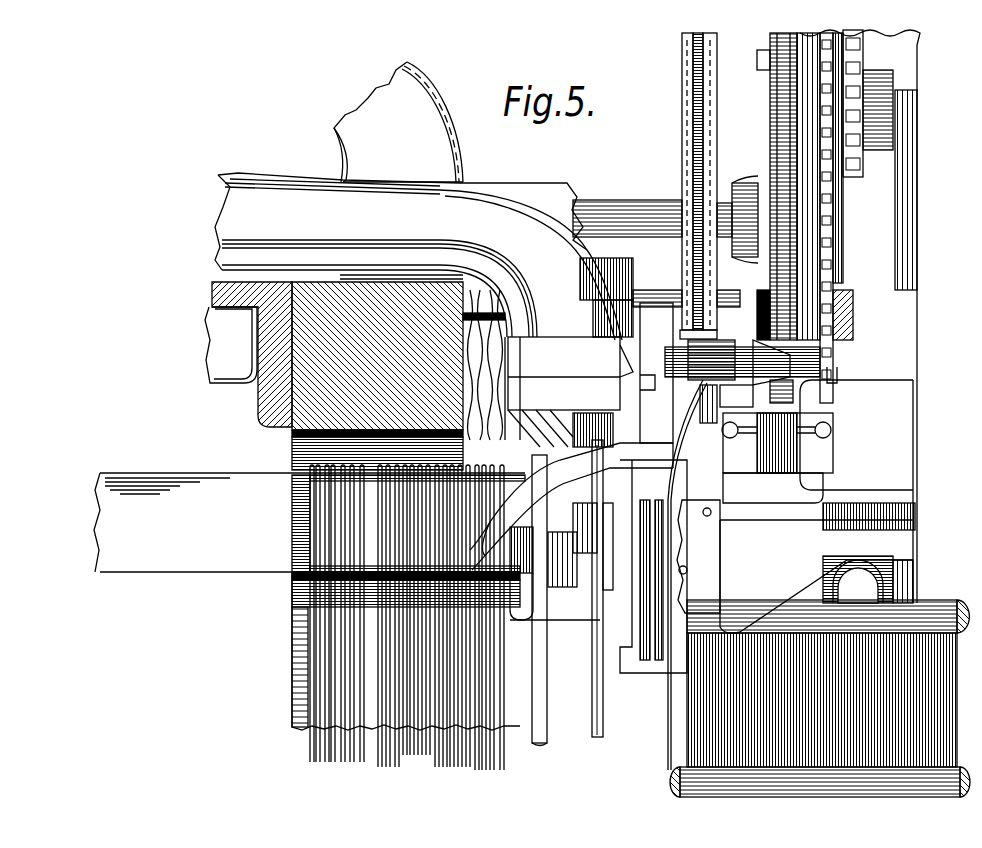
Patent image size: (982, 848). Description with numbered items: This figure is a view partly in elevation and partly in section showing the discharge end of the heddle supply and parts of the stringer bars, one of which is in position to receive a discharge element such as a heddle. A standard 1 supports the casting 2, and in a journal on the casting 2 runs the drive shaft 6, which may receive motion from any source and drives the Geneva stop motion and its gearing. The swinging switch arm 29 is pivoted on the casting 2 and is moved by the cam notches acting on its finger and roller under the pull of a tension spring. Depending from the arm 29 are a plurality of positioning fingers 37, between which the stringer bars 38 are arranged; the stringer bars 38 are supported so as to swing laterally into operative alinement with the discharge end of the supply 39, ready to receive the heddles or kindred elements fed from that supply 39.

The standard 1 is at (292, 667).
The casting 2 is at (315, 403).
The drive shaft 6 is at (606, 201).
The swinging switch arm 29 is at (424, 254).
The positioning fingers 37 is at (605, 421).
The stringer bars 38 is at (383, 506).
The supply 39 is at (708, 296).